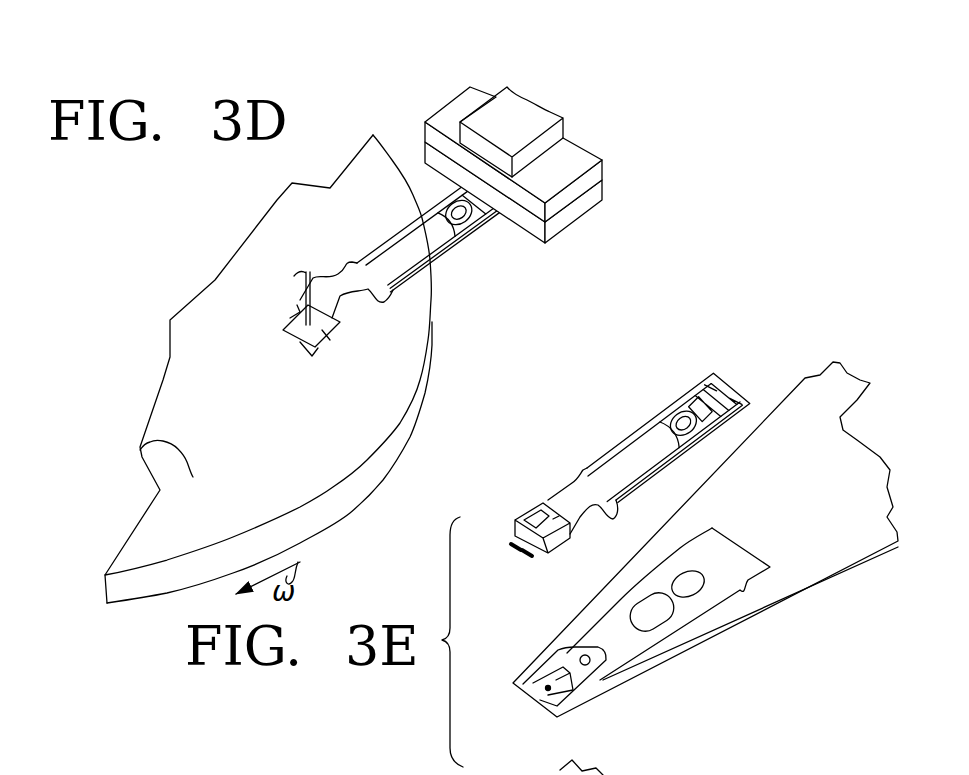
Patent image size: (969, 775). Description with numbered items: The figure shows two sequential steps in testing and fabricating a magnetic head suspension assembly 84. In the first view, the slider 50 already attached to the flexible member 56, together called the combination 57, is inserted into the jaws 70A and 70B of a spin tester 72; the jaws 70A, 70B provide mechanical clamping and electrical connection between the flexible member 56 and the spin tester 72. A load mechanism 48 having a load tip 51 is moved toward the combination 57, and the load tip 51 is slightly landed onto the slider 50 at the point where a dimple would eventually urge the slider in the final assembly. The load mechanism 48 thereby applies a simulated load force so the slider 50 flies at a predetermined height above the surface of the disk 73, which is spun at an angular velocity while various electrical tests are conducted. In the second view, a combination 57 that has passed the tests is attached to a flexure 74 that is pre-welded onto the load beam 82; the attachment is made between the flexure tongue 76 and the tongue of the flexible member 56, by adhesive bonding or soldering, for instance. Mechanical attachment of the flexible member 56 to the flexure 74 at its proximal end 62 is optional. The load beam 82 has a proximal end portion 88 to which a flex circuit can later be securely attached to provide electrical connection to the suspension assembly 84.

In FIG. 3D, the load mechanism 48 is at (368, 237).
In FIG. 3D, the slider 50 is at (322, 342).
In FIG. 3E, the slider 50 is at (521, 518).
In FIG. 3D, the load tip 51 is at (303, 282).
In FIG. 3D, the flexible member 56 is at (380, 246).
In FIG. 3E, the flexible member 56 is at (616, 427).
In FIG. 3D, the combination 57 is at (481, 271).
In FIG. 3E, the combination 57 is at (520, 472).
In FIG. 3E, the proximal end 62 is at (606, 446).
In FIG. 3D, the jaw 70A is at (565, 162).
In FIG. 3D, the jaw 70B is at (586, 192).
In FIG. 3D, the spin tester 72 is at (527, 121).
In FIG. 3D, the disk 73 is at (140, 450).
In FIG. 3E, the flexure 74 is at (745, 588).
In FIG. 3E, the flexure tongue 76 is at (578, 660).
In FIG. 3E, the load beam 82 is at (705, 539).
In FIG. 3E, the suspension assembly 84 is at (733, 658).
In FIG. 3E, the proximal end portion 88 is at (545, 774).